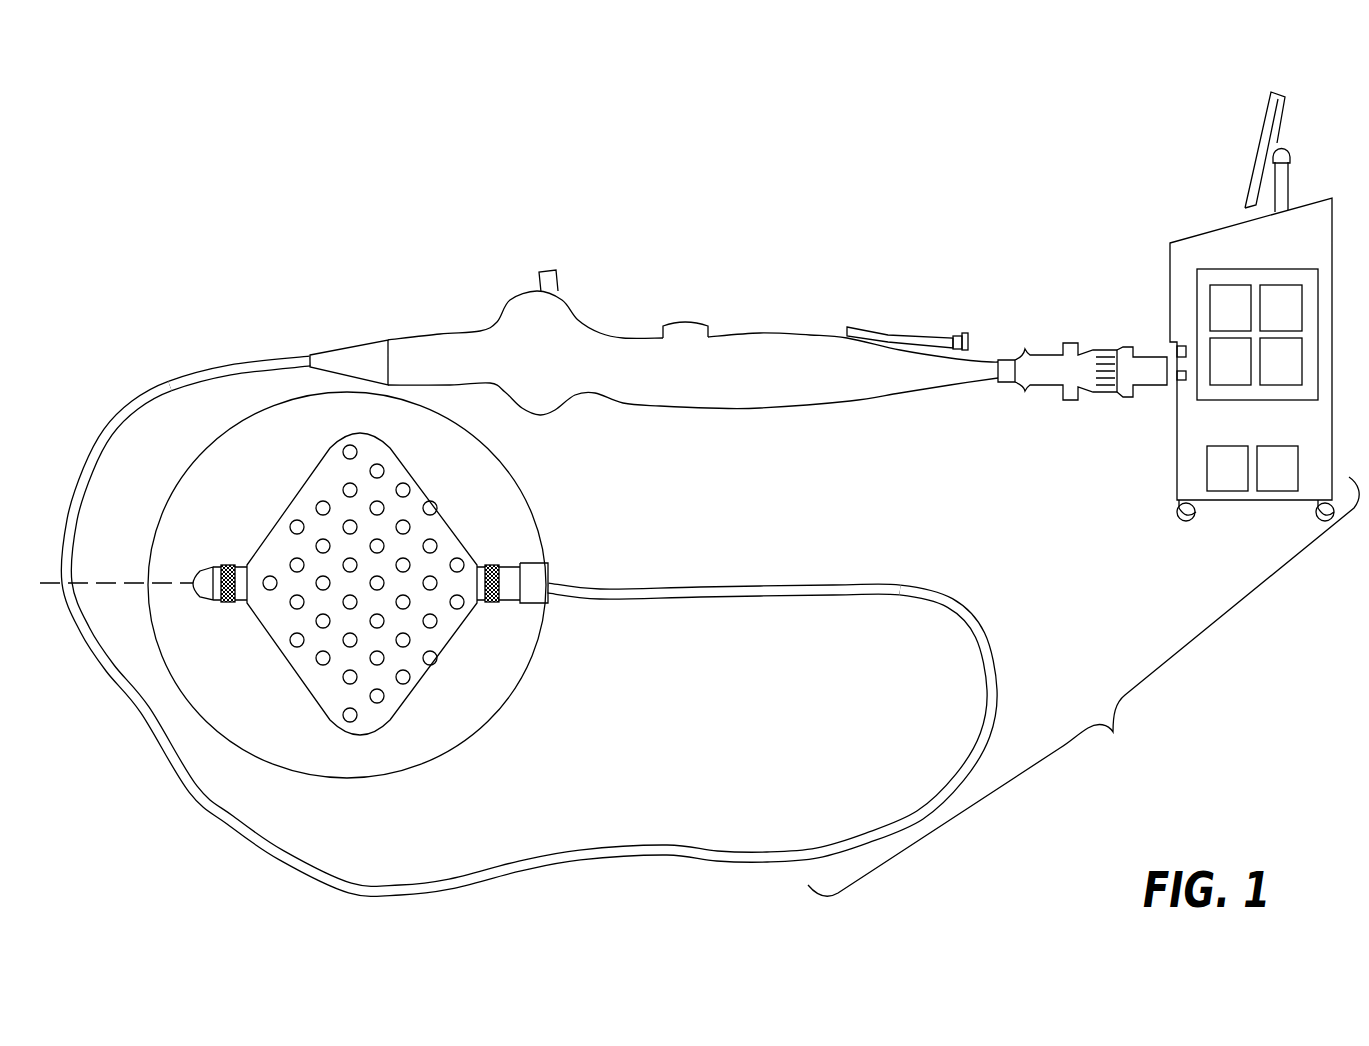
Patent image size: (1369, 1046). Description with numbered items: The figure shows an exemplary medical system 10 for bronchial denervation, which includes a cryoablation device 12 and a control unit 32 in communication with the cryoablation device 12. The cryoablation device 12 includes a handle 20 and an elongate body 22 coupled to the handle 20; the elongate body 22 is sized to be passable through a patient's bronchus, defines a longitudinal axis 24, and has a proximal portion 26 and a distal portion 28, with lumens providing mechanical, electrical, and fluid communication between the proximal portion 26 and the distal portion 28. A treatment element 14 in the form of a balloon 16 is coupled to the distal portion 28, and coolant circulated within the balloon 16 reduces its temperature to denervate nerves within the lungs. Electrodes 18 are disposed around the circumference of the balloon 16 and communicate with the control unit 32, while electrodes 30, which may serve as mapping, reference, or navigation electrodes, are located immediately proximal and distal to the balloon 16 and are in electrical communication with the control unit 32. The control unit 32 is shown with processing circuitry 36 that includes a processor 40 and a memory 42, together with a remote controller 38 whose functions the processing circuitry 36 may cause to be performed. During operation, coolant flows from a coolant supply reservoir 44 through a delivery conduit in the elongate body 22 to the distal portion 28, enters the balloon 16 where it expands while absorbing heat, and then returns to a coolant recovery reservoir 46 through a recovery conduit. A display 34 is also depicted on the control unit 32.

The medical system 10 is at (1083, 686).
The cryoablation device 12 is at (390, 303).
The treatment element 14 is at (347, 584).
The balloon 16 is at (408, 458).
The electrodes 18 is at (318, 663).
The handle 20 is at (758, 332).
The elongate body 22 is at (191, 805).
The longitudinal axis 24 is at (112, 582).
The proximal portion 26 is at (144, 393).
The distal portion 28 is at (524, 560).
The electrodes 30 is at (232, 603).
The control unit 32 is at (1252, 359).
The display 34 is at (1262, 143).
The processing circuitry 36 is at (1245, 321).
The remote controller 38 is at (1296, 321).
The processor 40 is at (1245, 375).
The memory 42 is at (1296, 375).
The coolant supply reservoir 44 is at (1242, 481).
The coolant recovery reservoir 46 is at (1292, 481).